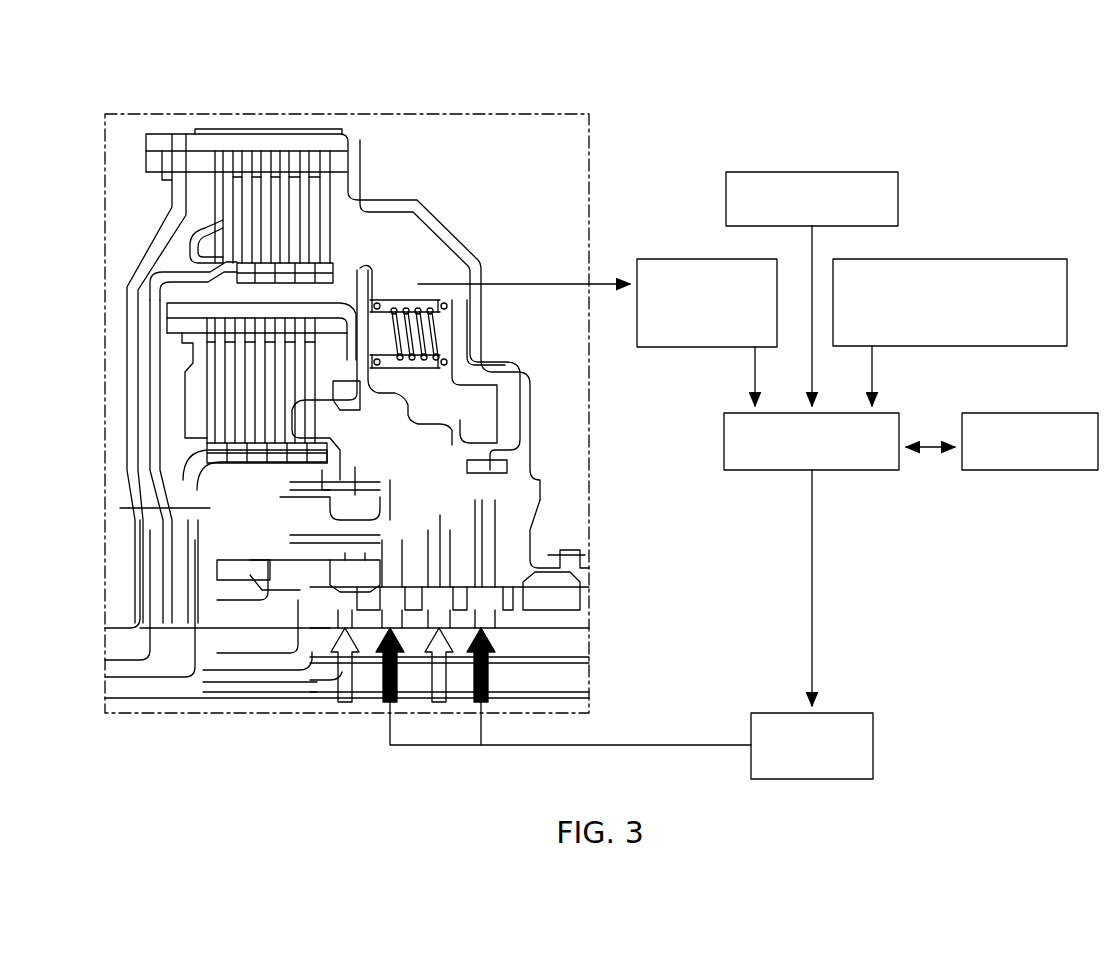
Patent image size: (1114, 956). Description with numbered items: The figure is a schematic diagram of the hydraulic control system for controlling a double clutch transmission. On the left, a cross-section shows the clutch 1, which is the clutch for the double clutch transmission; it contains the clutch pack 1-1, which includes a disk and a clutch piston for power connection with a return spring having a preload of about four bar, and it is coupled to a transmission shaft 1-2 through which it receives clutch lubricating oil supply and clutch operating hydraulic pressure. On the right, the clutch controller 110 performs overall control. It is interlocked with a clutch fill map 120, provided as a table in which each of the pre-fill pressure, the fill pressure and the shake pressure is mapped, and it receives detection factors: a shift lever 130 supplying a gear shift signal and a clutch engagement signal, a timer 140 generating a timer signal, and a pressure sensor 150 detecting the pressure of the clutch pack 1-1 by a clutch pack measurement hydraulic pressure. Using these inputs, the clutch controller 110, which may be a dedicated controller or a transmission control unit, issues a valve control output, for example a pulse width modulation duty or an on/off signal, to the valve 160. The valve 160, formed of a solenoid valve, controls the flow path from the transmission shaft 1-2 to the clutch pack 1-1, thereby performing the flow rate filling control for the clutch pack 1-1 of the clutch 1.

The clutch 1 is at (449, 224).
The clutch pack 1-1 is at (360, 268).
The transmission shaft 1-2 is at (325, 686).
The clutch controller 110 is at (760, 471).
The clutch fill map 120 is at (1032, 471).
The shift lever 130 is at (971, 259).
The timer 140 is at (813, 172).
The pressure sensor 150 is at (669, 259).
The valve 160 is at (874, 745).